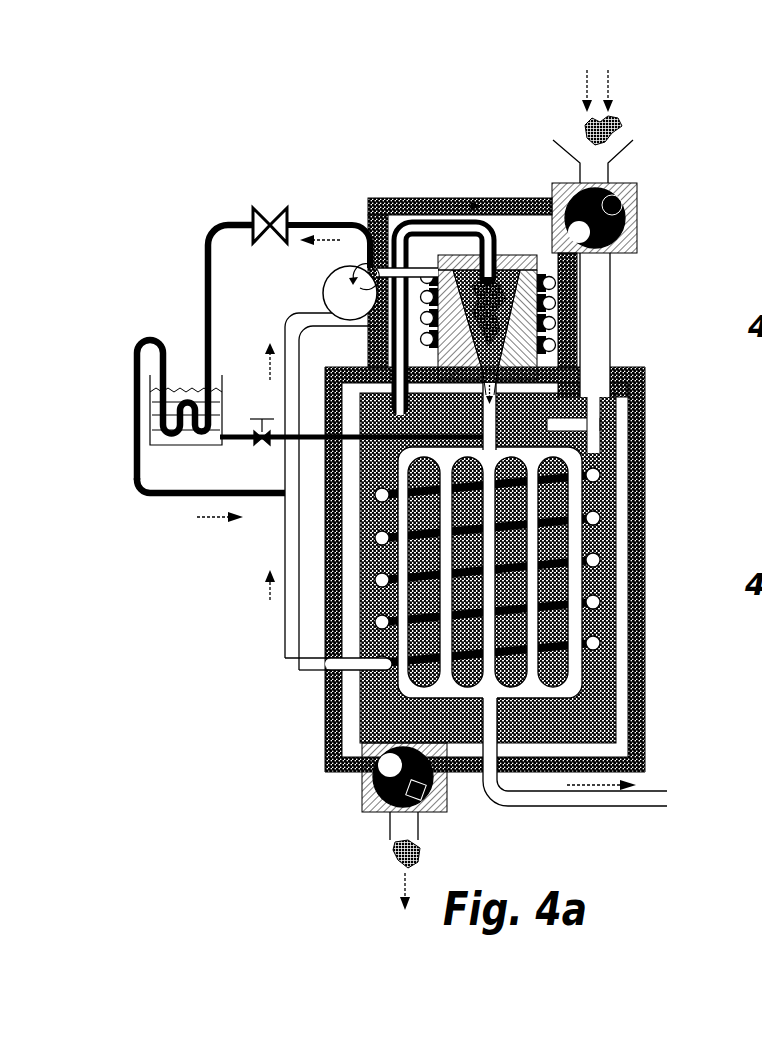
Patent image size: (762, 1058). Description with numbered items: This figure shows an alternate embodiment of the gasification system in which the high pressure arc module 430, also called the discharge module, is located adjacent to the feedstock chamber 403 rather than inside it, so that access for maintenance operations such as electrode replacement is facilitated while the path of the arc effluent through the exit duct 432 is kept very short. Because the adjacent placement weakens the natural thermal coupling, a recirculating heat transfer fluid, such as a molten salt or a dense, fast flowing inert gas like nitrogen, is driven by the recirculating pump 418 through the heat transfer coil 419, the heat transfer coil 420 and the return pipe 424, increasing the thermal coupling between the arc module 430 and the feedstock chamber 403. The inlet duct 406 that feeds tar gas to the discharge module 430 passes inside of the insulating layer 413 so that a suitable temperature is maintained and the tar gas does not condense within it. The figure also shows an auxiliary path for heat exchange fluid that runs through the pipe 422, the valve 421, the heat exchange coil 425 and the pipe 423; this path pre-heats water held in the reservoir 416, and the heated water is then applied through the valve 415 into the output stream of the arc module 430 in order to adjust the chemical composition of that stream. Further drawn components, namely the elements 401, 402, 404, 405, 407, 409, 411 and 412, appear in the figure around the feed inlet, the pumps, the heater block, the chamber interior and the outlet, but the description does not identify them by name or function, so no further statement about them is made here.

The feed material 401 is at (627, 132).
The feed pump 402 is at (640, 214).
The feedstock chamber 403 is at (605, 522).
The discharge pump 404 is at (355, 791).
The product 405 is at (393, 853).
The inlet duct 406 is at (395, 200).
The heater block 407 is at (457, 255).
The heating coils 409 is at (560, 292).
The reaction channel 411 is at (585, 466).
The outlet pipe 412 is at (613, 813).
The insulating layer 413 is at (645, 610).
The valve 415 is at (257, 447).
The reservoir 416 is at (162, 446).
The recirculating pump 418 is at (322, 288).
The heat transfer coil 419 is at (578, 333).
The heat transfer coil 420 is at (600, 646).
The valve 421 is at (244, 214).
The pipe 422 is at (340, 222).
The pipe 423 is at (188, 500).
The return pipe 424 is at (284, 622).
The heat exchange coil 425 is at (183, 395).
The high pressure arc module 430 is at (522, 253).
The exit duct 432 is at (507, 388).